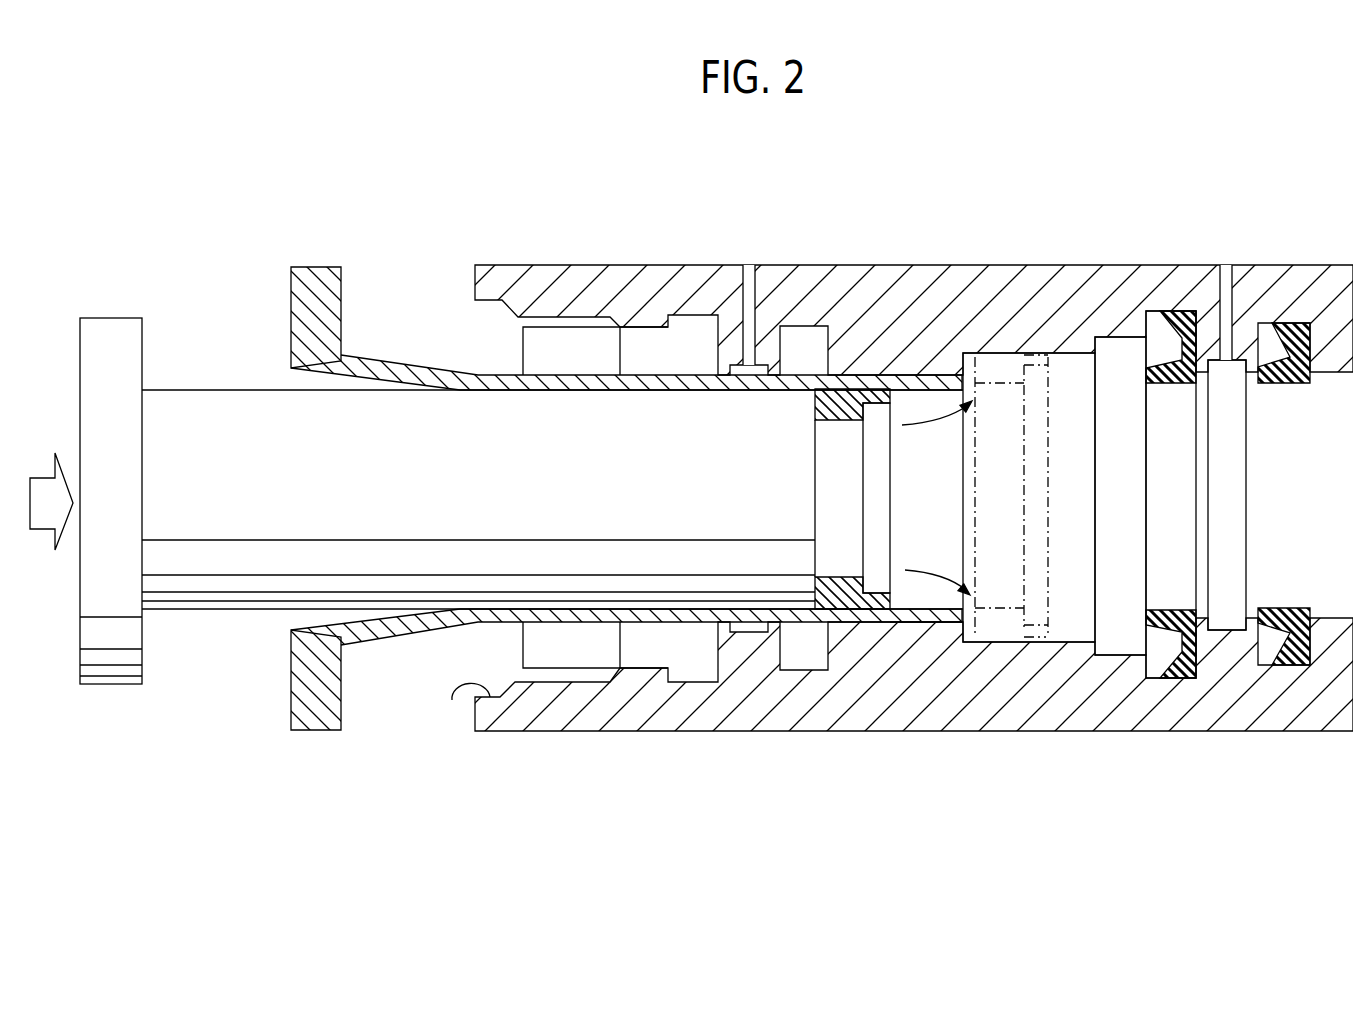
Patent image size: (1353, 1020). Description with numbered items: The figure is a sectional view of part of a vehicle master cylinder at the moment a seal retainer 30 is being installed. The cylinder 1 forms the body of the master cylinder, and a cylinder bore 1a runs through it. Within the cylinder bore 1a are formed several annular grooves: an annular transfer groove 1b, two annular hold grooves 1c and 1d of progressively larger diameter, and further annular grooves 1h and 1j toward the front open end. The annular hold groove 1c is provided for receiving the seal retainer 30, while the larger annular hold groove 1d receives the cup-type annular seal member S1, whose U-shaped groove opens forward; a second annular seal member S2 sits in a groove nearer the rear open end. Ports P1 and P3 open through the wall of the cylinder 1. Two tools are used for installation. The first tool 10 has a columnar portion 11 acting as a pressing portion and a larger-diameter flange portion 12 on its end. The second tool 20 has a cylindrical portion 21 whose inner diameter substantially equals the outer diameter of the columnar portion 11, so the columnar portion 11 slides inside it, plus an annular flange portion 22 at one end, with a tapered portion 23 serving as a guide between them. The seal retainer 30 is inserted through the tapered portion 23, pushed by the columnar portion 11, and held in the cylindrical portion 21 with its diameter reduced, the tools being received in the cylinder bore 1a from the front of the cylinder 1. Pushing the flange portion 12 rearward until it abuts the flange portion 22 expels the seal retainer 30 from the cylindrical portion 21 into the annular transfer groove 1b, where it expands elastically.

The cylinder 1 is at (1047, 290).
The cylinder bore 1a is at (822, 614).
The annular transfer groove 1b is at (1072, 630).
The annular hold groove 1c is at (1117, 645).
The annular hold groove 1d is at (1152, 672).
The annular groove 1h is at (652, 658).
The annular groove 1j is at (452, 700).
The first tool 10 is at (176, 625).
The columnar portion 11 is at (214, 400).
The flange portion 12 is at (111, 325).
The second tool 20 is at (372, 662).
The cylindrical portion 21 is at (477, 628).
The annular flange portion 22 is at (323, 272).
The tapered portion 23 is at (368, 366).
The seal retainer 30 is at (843, 606).
The port P1 is at (750, 277).
The port P3 is at (1226, 275).
The annular seal member S1 is at (1180, 325).
The annular seal member S2 is at (1287, 335).